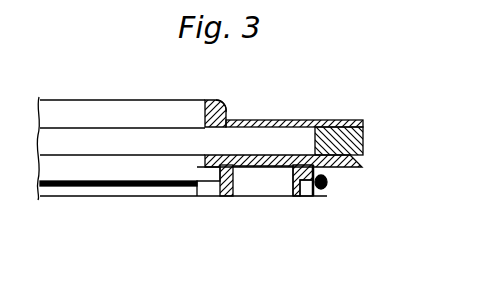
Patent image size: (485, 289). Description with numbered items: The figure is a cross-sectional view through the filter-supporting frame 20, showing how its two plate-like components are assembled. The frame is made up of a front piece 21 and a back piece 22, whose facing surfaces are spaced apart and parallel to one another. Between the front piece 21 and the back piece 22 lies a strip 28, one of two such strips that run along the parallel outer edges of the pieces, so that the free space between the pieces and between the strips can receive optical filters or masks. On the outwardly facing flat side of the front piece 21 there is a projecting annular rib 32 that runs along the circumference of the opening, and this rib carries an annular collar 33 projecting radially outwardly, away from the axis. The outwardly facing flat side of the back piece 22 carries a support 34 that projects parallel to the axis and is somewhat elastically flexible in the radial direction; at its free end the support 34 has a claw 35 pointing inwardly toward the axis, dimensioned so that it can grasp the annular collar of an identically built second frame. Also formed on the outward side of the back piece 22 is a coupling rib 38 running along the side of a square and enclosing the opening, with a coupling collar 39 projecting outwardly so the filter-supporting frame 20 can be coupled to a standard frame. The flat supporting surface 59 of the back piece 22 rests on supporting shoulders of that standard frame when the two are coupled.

The filter-supporting frame 20 is at (106, 94).
The front piece 21 is at (308, 120).
The back piece 22 is at (350, 162).
The strip 28 is at (364, 139).
The annular rib 32 is at (210, 100).
The annular collar 33 is at (227, 110).
The support 34 is at (226, 197).
The claw 35 is at (208, 188).
The coupling rib 38 is at (320, 197).
The coupling collar 39 is at (329, 184).
The flat supporting surface 59 is at (268, 168).